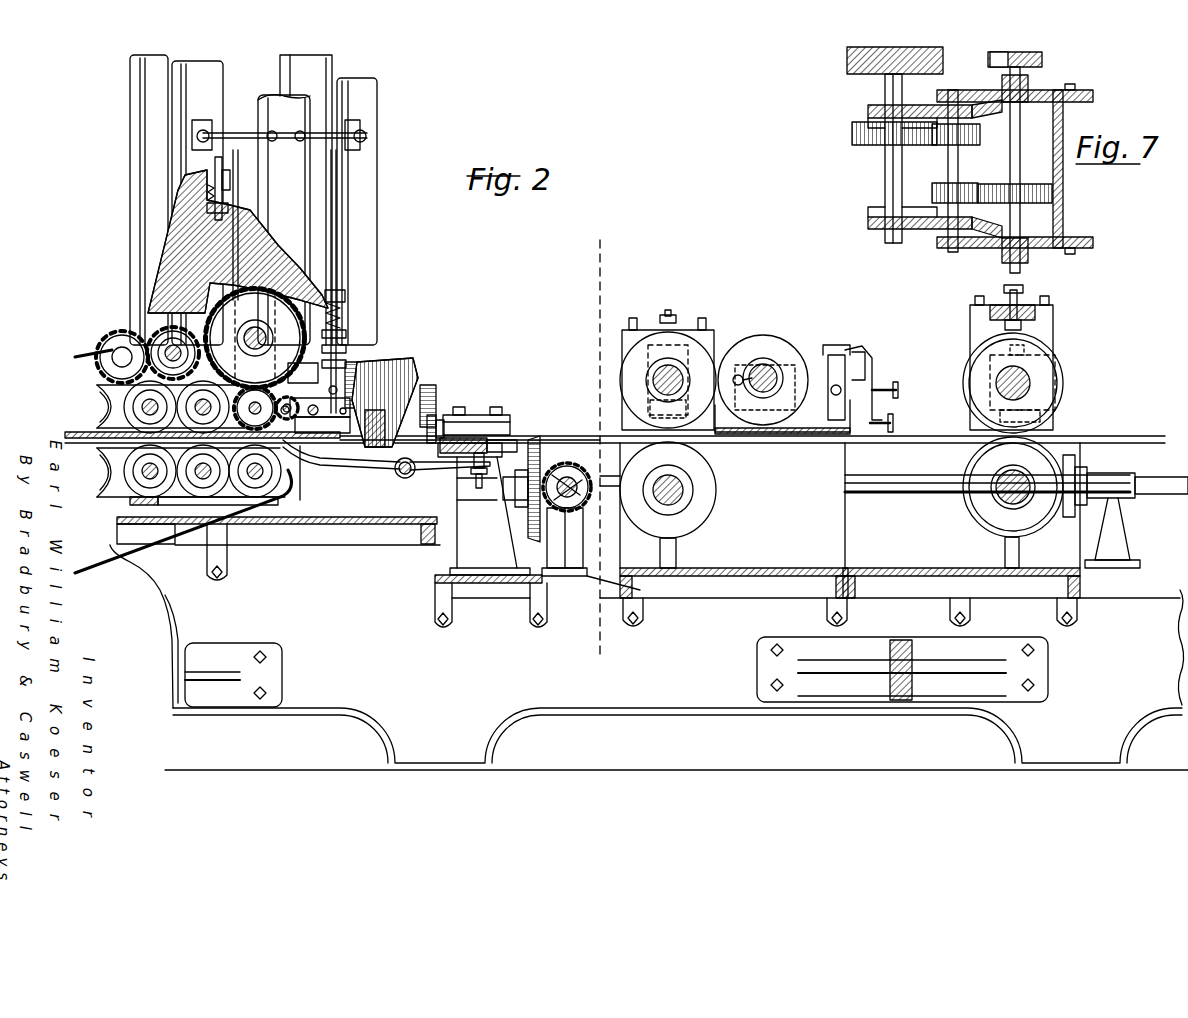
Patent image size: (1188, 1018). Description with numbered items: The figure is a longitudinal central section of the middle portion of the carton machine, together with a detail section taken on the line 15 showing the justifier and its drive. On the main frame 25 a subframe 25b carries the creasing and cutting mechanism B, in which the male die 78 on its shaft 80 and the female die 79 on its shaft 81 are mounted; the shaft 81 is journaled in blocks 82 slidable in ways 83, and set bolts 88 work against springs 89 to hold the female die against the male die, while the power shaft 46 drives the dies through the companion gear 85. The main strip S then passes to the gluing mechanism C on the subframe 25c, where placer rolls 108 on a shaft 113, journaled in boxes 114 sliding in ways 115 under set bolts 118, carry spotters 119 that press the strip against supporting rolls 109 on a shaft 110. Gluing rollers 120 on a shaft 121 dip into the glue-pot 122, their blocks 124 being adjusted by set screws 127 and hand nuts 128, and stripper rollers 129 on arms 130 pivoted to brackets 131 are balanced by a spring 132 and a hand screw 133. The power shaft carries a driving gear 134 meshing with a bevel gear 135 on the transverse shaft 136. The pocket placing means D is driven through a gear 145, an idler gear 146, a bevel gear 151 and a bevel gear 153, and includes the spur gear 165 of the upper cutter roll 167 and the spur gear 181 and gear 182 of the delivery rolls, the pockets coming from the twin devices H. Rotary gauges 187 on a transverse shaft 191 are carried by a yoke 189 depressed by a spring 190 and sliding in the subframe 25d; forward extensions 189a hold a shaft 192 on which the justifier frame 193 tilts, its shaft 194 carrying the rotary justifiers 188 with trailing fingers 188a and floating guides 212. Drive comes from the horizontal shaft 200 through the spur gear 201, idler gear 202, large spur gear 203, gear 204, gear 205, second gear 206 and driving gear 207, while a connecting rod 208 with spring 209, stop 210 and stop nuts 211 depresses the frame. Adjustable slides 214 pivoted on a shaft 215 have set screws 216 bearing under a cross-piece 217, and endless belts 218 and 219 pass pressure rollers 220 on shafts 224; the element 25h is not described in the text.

In FIG. 2, the section line 15— 15 is at (595, 447).
In FIG. 2, the main frame 25 is at (676, 680).
In FIG. 2, the subframe 25b is at (987, 505).
In FIG. 2, the subframe 25c is at (722, 505).
In FIG. 2, the subframe 25d is at (150, 246).
In FIG. 2, the frame post 25h is at (132, 105).
In FIG. 2, the power shaft 46 is at (1152, 480).
In FIG. 2, the male die 78 is at (972, 472).
In FIG. 2, the female die 79 is at (1063, 383).
In FIG. 2, the shaft 80 is at (1010, 498).
In FIG. 2, the shaft 81 is at (1000, 386).
In FIG. 2, the blocks 82 is at (975, 375).
In FIG. 2, the ways 83 is at (985, 335).
In FIG. 2, the companion gear 85 is at (1072, 460).
In FIG. 2, the set bolts 88 is at (1020, 300).
In FIG. 2, the springs 89 is at (1060, 406).
In FIG. 2, the placer rolls 108 is at (675, 340).
In FIG. 2, the supporting rolls 109 is at (690, 510).
In FIG. 2, the shaft 110 is at (668, 490).
In FIG. 2, the shaft 113 is at (620, 380).
In FIG. 2, the boxes 114 is at (710, 350).
In FIG. 2, the ways 115 is at (650, 340).
In FIG. 2, the set bolts 118 is at (670, 318).
In FIG. 2, the spotters 119 is at (620, 410).
In FIG. 2, the gluing rollers 120 is at (763, 345).
In FIG. 2, the shaft 121 is at (778, 364).
In FIG. 2, the glue-pot 122 is at (778, 435).
In FIG. 2, the blocks 124 is at (765, 387).
In FIG. 2, the set screws 127 is at (890, 423).
In FIG. 2, the hand nuts 128 is at (850, 434).
In FIG. 2, the stripper rollers 129 is at (818, 432).
In FIG. 2, the arms 130 is at (836, 355).
In FIG. 2, the brackets 131 is at (863, 362).
In FIG. 2, the spring 132 is at (860, 350).
In FIG. 2, the hand screw 133 is at (895, 382).
In FIG. 2, the driving gear 134 is at (532, 445).
In FIG. 2, the bevel gear 135 is at (568, 466).
In FIG. 2, the shaft 136 is at (540, 505).
In FIG. 2, the gear 145 is at (430, 405).
In FIG. 2, the idler gear 146 is at (440, 380).
In FIG. 2, the bevel gear 151 is at (405, 385).
In FIG. 2, the bevel gear 153 is at (395, 355).
In FIG. 2, the spur gear 165 is at (355, 362).
In FIG. 2, the upper cutter roll 167 is at (334, 290).
In FIG. 2, the spur gear 181 is at (405, 360).
In FIG. 2, the gear 182 is at (340, 450).
In FIG. 2, the rotary gauges 187 is at (205, 475).
In FIG. 7, the rotary gauges 187 is at (848, 60).
In FIG. 2, the rotary justifiers 188 is at (346, 350).
In FIG. 7, the rotary justifiers 188 is at (990, 62).
In FIG. 7, the trailing finger 188a is at (1042, 60).
In FIG. 2, the yoke 189 is at (270, 250).
In FIG. 7, the forward extensions 189a is at (925, 230).
In FIG. 2, the spring 190 is at (230, 196).
In FIG. 2, the transverse shaft 191 is at (191, 481).
In FIG. 7, the transverse shaft 191 is at (885, 170).
In FIG. 2, the shaft 192 is at (300, 446).
In FIG. 7, the shaft 192 is at (974, 171).
In FIG. 7, the justifier frame 193 is at (1060, 236).
In FIG. 7, the shaft 194 is at (1022, 125).
In FIG. 2, the horizontal shaft 200 is at (120, 345).
In FIG. 2, the spur gear 201 is at (140, 340).
In FIG. 2, the idler gear 202 is at (173, 352).
In FIG. 2, the large spur gear 203 is at (255, 338).
In FIG. 2, the gear 204 is at (255, 335).
In FIG. 7, the gear 204 is at (861, 133).
In FIG. 2, the gear 205 is at (315, 416).
In FIG. 7, the gear 205 is at (942, 146).
In FIG. 7, the second gear 206 is at (932, 192).
In FIG. 7, the driving gear 207 is at (1055, 194).
In FIG. 2, the connecting rod 208 is at (345, 292).
In FIG. 2, the spring 209 is at (345, 308).
In FIG. 2, the stop 210 is at (345, 332).
In FIG. 2, the stop nuts 211 is at (365, 290).
In FIG. 2, the floating guides 212 is at (322, 448).
In FIG. 7, the floating guides 212 is at (1090, 92).
In FIG. 2, the adjustable slides 214 is at (312, 480).
In FIG. 2, the shaft 215 is at (405, 480).
In FIG. 2, the set screw 216 is at (480, 488).
In FIG. 2, the cross-piece 217 is at (478, 430).
In FIG. 2, the endless belts 218 is at (78, 360).
In FIG. 2, the endless belts 219 is at (130, 560).
In FIG. 2, the pressure rollers 220 is at (110, 405).
In FIG. 2, the shafts 224 is at (150, 472).
In FIG. 2, the creasing and cutting mechanism B is at (1085, 345).
In FIG. 2, the gluing mechanism C is at (708, 285).
In FIG. 2, the pocket placing means D is at (365, 342).
In FIG. 2, the twin devices H is at (390, 92).
In FIG. 2, the main strip S is at (1110, 432).